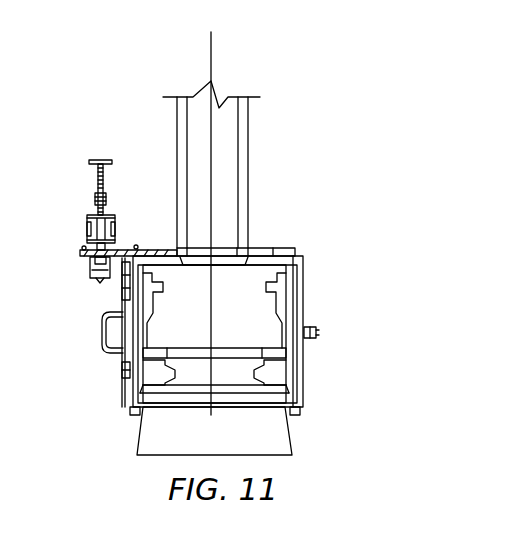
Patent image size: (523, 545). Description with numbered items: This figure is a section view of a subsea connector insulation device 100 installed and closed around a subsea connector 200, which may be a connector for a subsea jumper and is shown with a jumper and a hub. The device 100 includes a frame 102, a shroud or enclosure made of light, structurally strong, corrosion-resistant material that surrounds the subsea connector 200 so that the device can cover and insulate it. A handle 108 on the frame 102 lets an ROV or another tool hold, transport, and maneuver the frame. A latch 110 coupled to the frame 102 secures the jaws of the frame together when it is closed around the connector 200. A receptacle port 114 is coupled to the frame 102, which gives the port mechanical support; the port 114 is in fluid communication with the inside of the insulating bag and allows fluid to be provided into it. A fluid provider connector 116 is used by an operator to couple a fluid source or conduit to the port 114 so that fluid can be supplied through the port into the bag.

The subsea connector insulation device 100 is at (312, 217).
The frame 102 is at (305, 267).
The handle 108 is at (103, 352).
The latch 110 is at (317, 328).
The receptacle port 114 is at (85, 220).
The fluid provider connector 116 is at (98, 178).
The subsea connector 200 is at (262, 338).